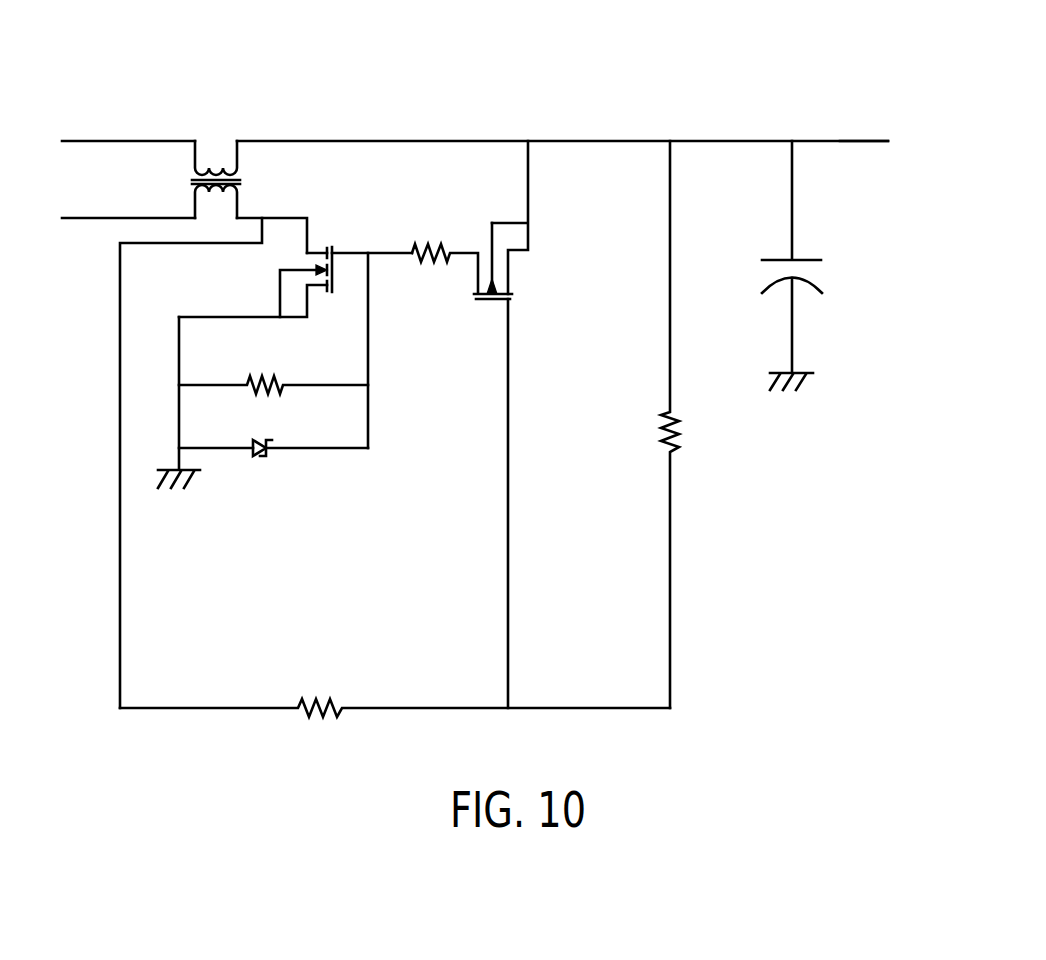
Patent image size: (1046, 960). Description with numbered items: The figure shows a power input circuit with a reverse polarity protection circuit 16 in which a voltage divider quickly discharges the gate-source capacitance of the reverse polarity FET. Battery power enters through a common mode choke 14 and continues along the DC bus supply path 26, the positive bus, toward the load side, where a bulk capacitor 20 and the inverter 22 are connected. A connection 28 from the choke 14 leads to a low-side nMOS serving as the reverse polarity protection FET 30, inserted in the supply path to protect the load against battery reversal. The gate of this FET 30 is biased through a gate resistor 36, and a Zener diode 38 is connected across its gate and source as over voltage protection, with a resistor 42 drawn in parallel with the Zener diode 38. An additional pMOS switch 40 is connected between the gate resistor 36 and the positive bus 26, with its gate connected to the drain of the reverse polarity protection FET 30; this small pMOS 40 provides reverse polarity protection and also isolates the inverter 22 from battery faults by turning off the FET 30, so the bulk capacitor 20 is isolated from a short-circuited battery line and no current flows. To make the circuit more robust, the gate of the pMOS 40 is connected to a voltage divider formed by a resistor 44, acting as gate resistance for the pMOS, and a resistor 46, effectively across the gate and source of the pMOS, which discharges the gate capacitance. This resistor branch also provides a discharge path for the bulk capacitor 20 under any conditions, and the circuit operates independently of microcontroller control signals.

The common mode choke 14 is at (207, 168).
The reverse polarity protection circuit 16 is at (501, 103).
The bulk capacitor 20 is at (799, 259).
The inverter 22 is at (902, 154).
The DC bus supply path 26 is at (269, 141).
The secondary winding node 28 is at (247, 221).
The reverse polarity protection FET 30 is at (335, 280).
The gate resistor 36 is at (432, 246).
The Zener diode 38 is at (259, 452).
The pMOS switch 40 is at (492, 299).
The resistor R2 42 is at (284, 388).
The resistor R3 44 is at (316, 712).
The resistor R4 46 is at (681, 421).